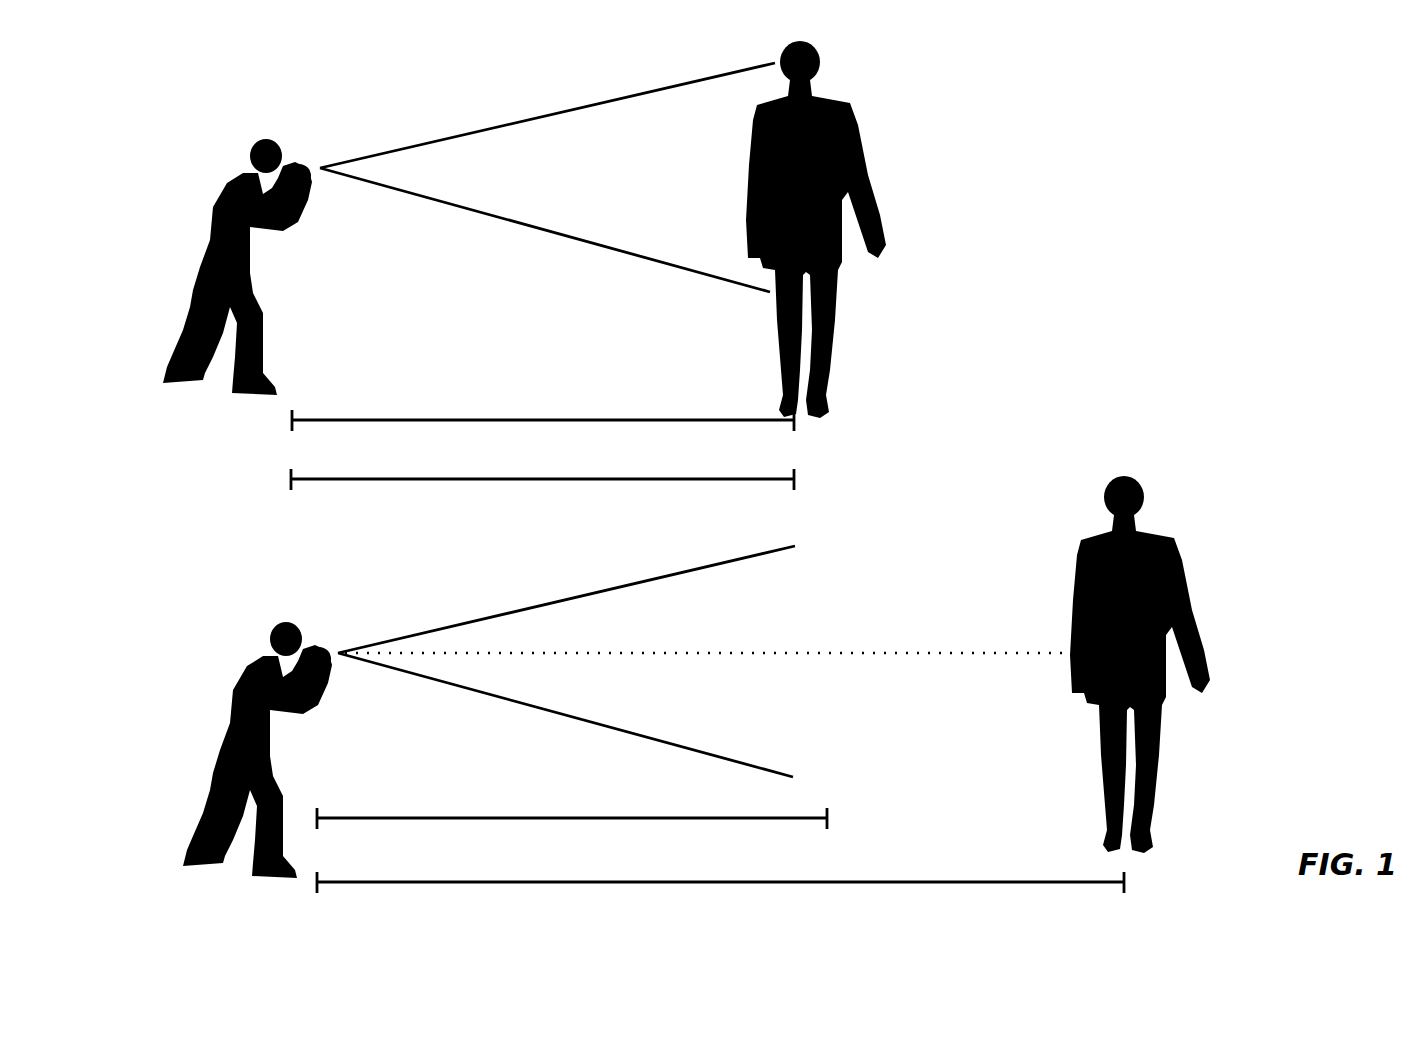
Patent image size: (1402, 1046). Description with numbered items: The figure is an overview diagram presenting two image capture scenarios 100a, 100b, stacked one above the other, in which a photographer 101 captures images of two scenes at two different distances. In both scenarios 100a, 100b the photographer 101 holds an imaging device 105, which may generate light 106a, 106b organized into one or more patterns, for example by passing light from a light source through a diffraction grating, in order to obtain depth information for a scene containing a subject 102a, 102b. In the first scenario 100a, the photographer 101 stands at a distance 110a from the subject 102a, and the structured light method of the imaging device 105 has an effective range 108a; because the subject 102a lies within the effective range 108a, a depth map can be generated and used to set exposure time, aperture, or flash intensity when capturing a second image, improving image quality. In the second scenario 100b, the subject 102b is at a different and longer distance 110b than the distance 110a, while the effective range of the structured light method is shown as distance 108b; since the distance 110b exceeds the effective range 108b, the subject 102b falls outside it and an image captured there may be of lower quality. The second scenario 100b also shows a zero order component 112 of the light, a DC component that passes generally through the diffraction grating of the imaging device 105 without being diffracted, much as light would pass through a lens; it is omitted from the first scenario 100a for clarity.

The first image capture scenario 100a is at (1286, 99).
The second image capture scenario 100b is at (1306, 434).
The photographer 101 is at (265, 139).
The subject 102a is at (845, 105).
The subject 102b is at (1122, 478).
The imaging device 105 is at (308, 164).
The generated light 106a is at (437, 142).
The generated light 106b is at (434, 628).
The effective range 108a is at (433, 416).
The effective range 108b is at (466, 816).
The distance 110a is at (505, 476).
The distance 110b is at (533, 880).
The zero order component 112 is at (807, 650).